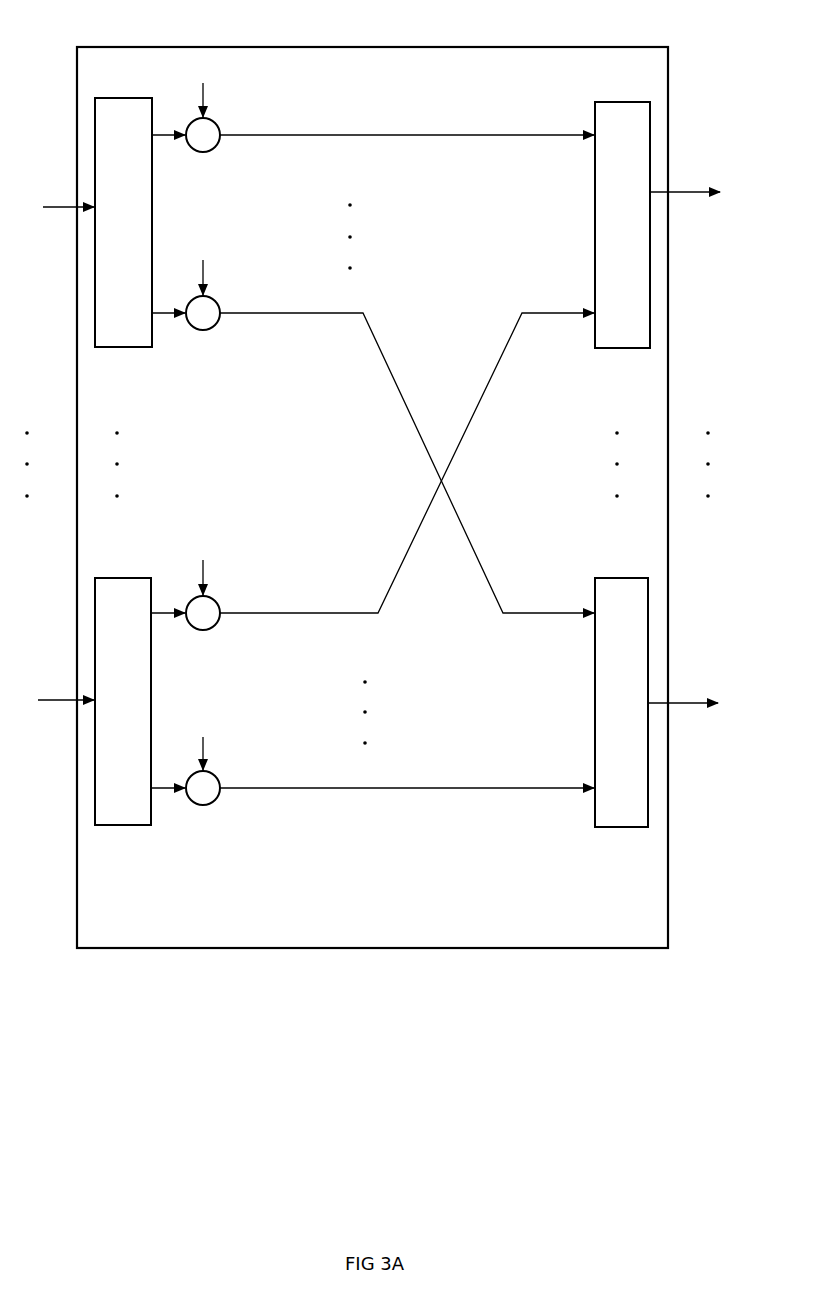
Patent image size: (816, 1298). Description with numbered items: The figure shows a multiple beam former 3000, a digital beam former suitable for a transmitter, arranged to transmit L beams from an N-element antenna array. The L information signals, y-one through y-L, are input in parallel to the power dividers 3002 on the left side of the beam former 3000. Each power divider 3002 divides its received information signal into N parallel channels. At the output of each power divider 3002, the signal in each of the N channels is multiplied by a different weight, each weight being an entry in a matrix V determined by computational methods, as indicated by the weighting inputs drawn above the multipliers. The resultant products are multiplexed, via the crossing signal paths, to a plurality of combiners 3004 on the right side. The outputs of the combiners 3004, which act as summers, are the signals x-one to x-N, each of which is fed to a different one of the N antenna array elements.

The multiple beam former 3000 is at (140, 47).
The power divider 3002 is at (101, 350).
The combiner 3004 is at (644, 350).